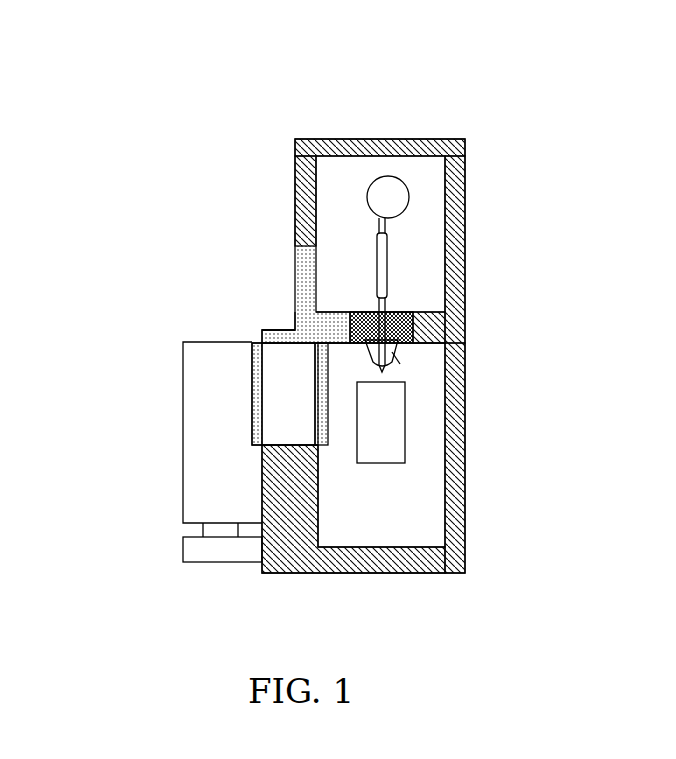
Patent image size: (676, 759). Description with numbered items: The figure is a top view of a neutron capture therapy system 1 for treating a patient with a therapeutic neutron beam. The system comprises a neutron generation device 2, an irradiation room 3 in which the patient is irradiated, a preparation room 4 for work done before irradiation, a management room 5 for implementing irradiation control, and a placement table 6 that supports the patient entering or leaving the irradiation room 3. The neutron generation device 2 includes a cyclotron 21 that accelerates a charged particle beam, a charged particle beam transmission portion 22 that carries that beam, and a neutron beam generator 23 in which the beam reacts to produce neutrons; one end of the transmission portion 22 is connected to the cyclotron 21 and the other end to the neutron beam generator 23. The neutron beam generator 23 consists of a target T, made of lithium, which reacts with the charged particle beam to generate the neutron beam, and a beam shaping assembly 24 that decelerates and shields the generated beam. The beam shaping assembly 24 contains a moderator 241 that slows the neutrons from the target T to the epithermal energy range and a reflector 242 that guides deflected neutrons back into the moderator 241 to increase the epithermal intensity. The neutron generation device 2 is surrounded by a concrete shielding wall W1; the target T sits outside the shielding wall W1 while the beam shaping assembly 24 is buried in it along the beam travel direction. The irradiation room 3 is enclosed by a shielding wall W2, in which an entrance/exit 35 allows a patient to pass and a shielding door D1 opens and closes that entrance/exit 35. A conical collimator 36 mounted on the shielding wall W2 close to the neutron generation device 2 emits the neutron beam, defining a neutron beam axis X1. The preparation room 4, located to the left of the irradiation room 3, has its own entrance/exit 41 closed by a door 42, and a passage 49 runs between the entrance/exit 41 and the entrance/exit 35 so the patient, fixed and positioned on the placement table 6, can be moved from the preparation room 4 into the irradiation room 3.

The neutron capture therapy system 1 is at (332, 70).
The neutron generation device 2 is at (413, 170).
The cyclotron 21 is at (402, 190).
The charged particle beam transmission portion 22 is at (390, 262).
The neutron beam generator 23 is at (365, 318).
The beam shaping assembly 24 is at (452, 320).
The moderator 241 is at (305, 310).
The reflector 242 is at (345, 312).
The irradiation room 3 is at (410, 497).
The entrance/exit 35 is at (322, 448).
The collimator 36 is at (400, 355).
The preparation room 4 is at (208, 507).
The entrance/exit 41 is at (255, 385).
The door 42 is at (255, 412).
The passage 49 is at (283, 420).
The management room 5 is at (220, 550).
The placement table 6 is at (403, 423).
The shielding wall W1 is at (455, 212).
The shielding wall W2 is at (452, 527).
The target T is at (402, 313).
The shielding door D1 is at (262, 328).
The neutron beam axis X1 is at (401, 364).